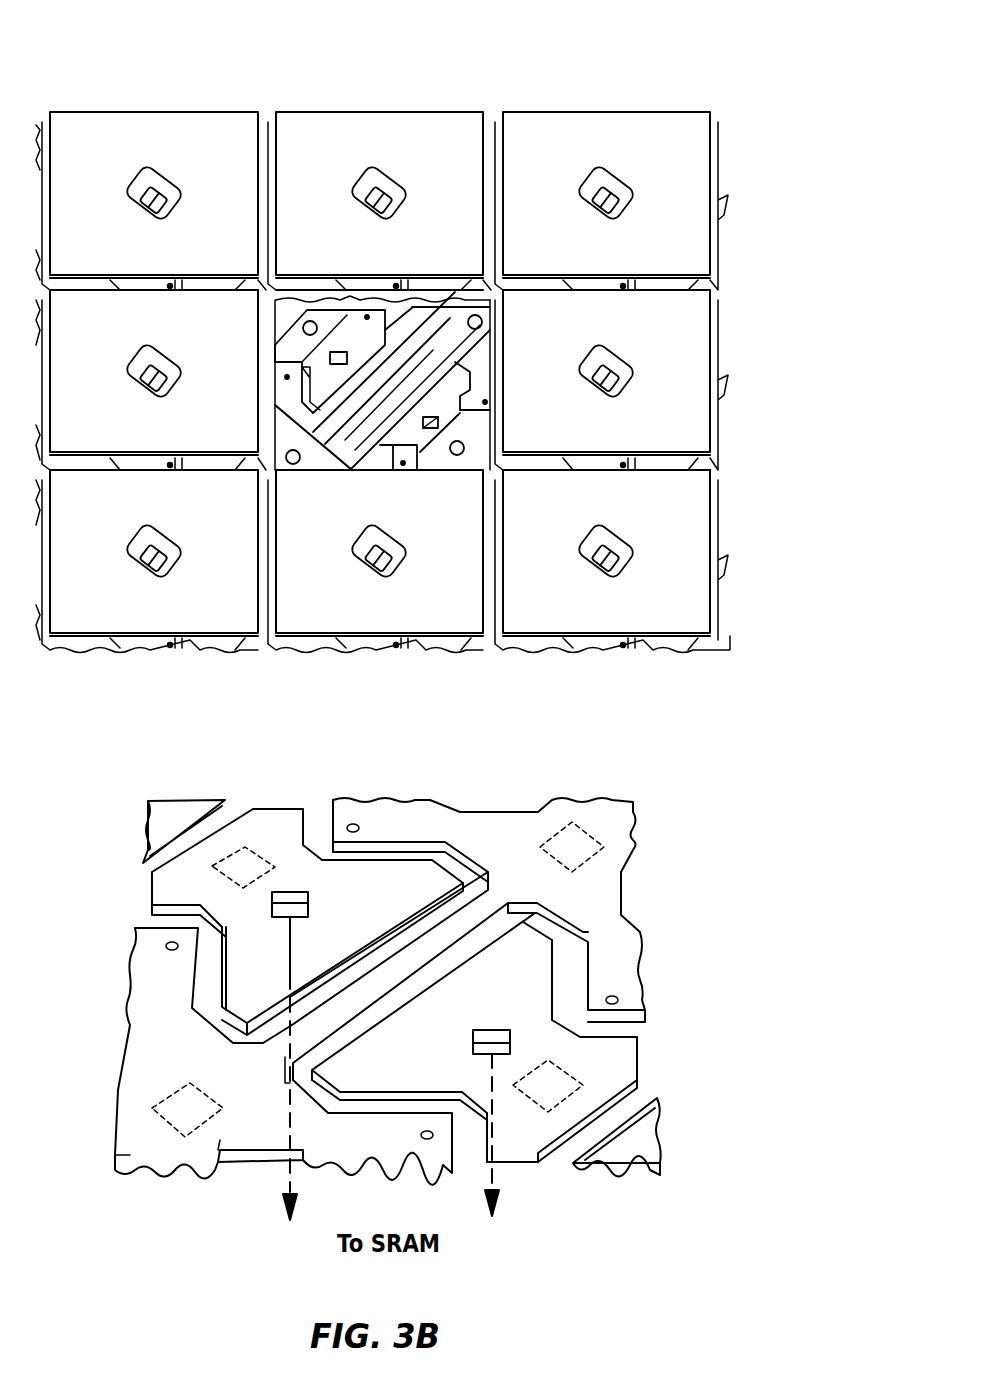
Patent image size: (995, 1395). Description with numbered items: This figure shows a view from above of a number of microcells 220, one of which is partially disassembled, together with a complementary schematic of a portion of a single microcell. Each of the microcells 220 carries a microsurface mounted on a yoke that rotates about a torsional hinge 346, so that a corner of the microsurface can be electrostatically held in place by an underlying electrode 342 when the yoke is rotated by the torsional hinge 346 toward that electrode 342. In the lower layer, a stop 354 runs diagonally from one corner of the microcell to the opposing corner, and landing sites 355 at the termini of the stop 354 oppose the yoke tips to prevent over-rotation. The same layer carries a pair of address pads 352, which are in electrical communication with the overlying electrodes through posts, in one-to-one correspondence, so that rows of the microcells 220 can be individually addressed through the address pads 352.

The microcells 220 is at (577, 97).
The torsional hinge 346 is at (420, 362).
The address pads 352 is at (435, 408).
The electrode 342 is at (467, 439).
The landing sites 355 is at (170, 947).
The stop 354 is at (140, 1135).